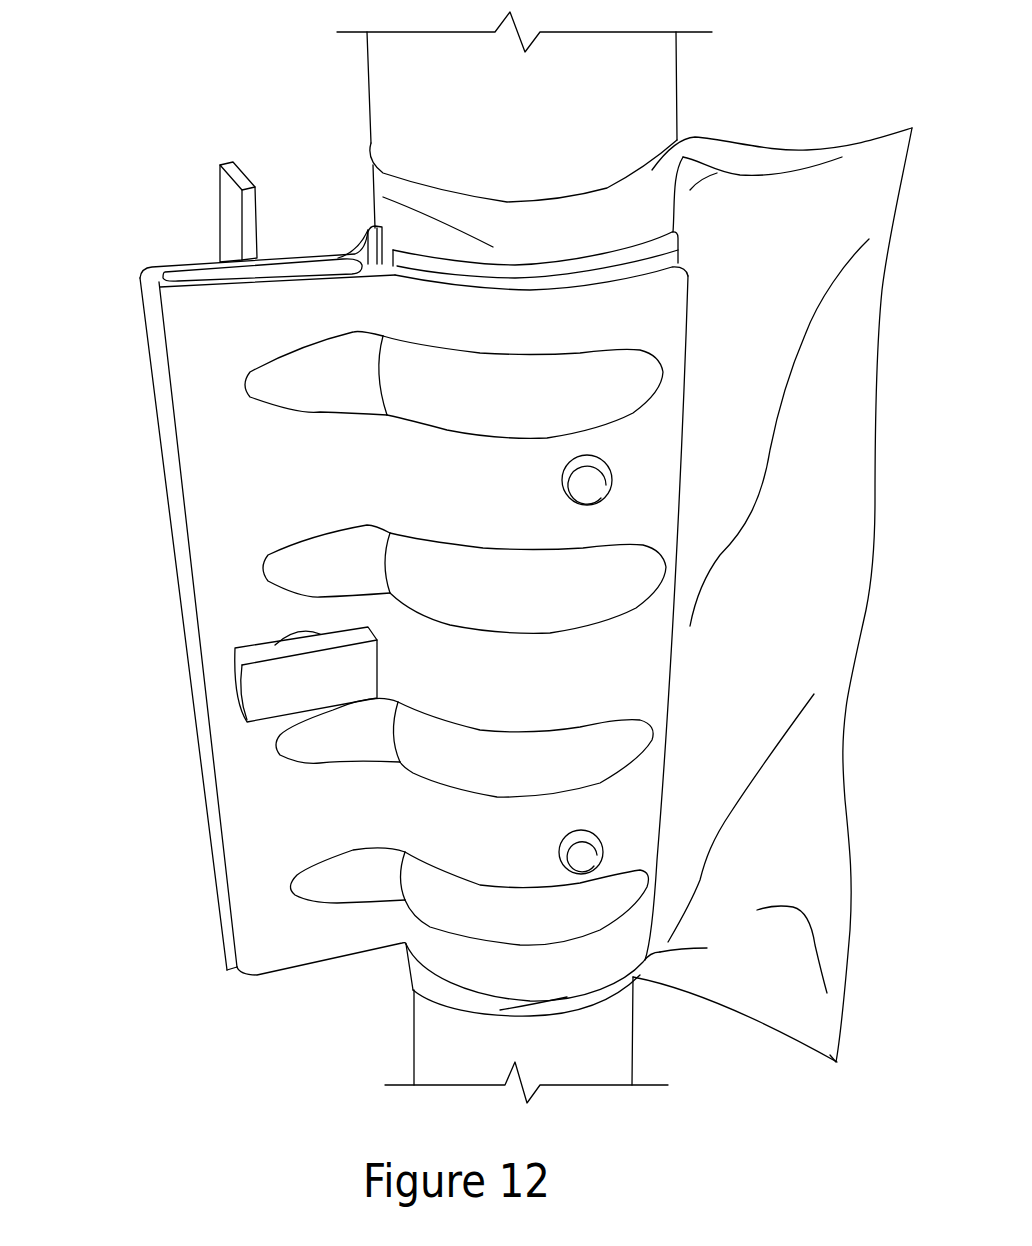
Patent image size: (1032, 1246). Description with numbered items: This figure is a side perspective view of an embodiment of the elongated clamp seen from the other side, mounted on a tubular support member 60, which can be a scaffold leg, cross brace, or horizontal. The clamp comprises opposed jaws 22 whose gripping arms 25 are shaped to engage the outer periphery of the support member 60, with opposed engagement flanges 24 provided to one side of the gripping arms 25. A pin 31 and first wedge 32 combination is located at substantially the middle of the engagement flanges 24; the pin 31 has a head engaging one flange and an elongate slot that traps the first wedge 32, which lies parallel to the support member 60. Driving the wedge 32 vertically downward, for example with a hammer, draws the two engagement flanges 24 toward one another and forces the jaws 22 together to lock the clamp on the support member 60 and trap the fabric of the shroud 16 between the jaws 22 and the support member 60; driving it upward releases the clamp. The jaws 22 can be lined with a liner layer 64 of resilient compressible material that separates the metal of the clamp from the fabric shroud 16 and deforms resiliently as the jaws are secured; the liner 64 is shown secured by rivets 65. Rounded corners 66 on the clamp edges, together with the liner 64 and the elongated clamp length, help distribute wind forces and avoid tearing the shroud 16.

The shroud 16 is at (812, 1020).
The jaws 22 is at (648, 304).
The engagement flanges 24 is at (147, 276).
The gripping arms 25 is at (630, 437).
The pin 31 is at (283, 690).
The first wedge 32 is at (237, 230).
The support member 60 is at (410, 72).
The liner layer 64 is at (370, 240).
The rivets 65 is at (592, 480).
The rounded corners 66 is at (687, 277).